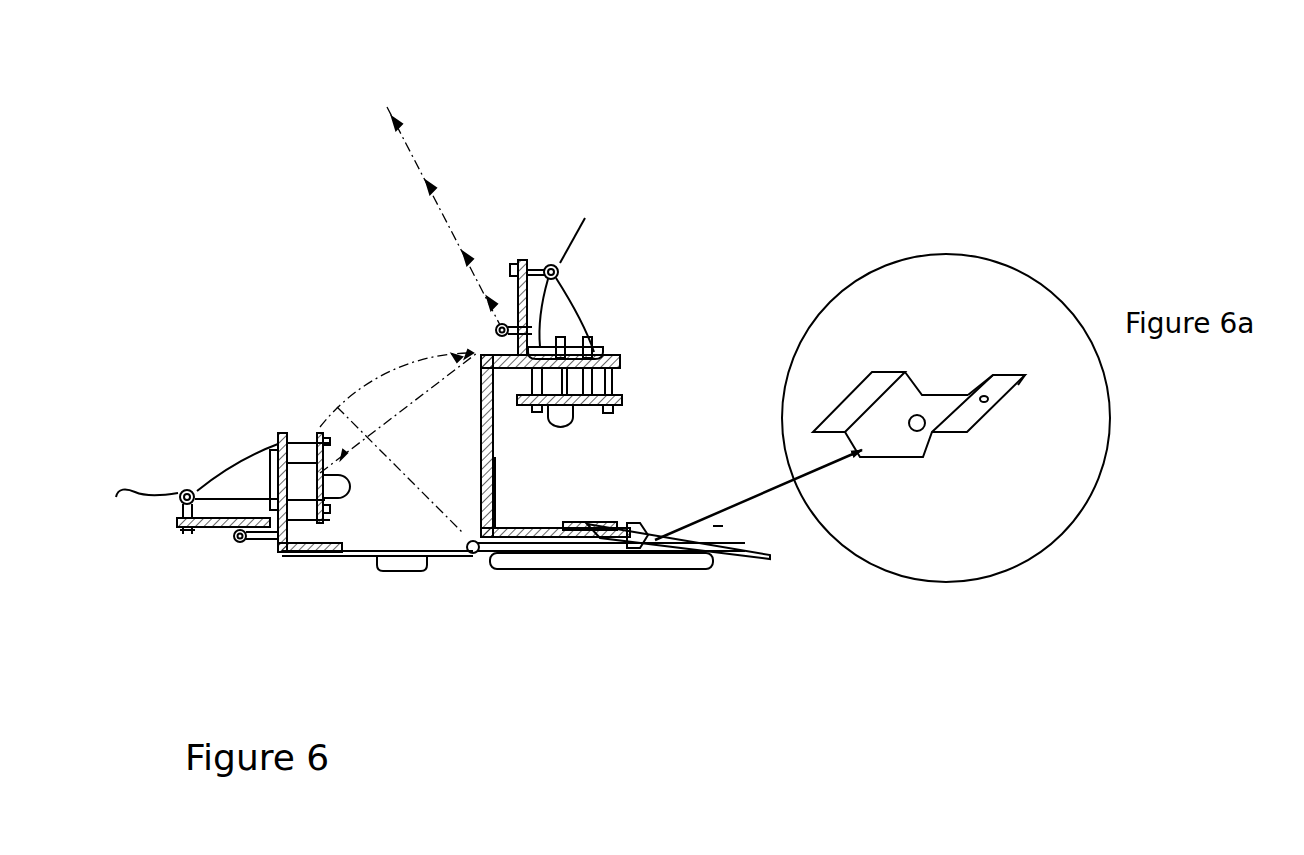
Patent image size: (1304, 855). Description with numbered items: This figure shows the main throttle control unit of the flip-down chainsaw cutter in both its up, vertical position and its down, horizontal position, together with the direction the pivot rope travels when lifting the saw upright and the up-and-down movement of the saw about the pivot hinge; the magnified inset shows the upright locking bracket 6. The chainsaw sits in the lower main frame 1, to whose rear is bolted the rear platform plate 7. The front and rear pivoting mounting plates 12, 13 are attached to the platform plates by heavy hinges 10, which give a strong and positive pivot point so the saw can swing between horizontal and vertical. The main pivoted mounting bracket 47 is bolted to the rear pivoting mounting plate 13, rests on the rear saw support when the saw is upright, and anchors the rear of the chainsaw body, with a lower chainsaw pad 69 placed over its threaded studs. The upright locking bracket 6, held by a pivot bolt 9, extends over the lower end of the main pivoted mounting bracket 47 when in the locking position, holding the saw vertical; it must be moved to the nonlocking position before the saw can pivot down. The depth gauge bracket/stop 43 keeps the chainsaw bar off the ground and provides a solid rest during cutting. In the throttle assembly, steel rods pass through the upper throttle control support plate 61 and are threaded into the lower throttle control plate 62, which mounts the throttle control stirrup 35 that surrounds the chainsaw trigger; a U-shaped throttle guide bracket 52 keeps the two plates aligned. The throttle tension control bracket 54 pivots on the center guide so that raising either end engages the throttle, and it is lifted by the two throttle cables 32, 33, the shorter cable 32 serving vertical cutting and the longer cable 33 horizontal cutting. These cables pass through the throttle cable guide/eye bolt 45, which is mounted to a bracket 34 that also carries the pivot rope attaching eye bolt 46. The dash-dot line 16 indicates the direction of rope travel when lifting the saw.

In FIG. 6, the lower main frame 1 is at (635, 558).
In FIG. 6, the upright locking bracket 6 is at (720, 530).
In FIG. 6A, the upright locking bracket 6 is at (1027, 273).
In FIG. 6, the rear platform plate 7 is at (362, 553).
In FIG. 6, the pivot bolt 9 is at (670, 538).
In FIG. 6A, the pivot bolt 9 is at (922, 415).
In FIG. 6, the heavy hinge 10 is at (476, 552).
In FIG. 6, the front pivoting mounting plate 12 is at (483, 437).
In FIG. 6, the rear pivoting mounting plate 13 is at (483, 437).
In FIG. 6, the axis 16 is at (453, 238).
In FIG. 6, the throttle cable 32 is at (557, 268).
In FIG. 6, the throttle cable 33 is at (567, 285).
In FIG. 6, the bracket 34 is at (213, 528).
In FIG. 6, the throttle control stirrup 35 is at (622, 397).
In FIG. 6, the depth gauge bracket/stop 43 is at (400, 563).
In FIG. 6, the throttle cable guide/eye bolt 45 is at (549, 266).
In FIG. 6, the pivot rope attaching eye bolt 46 is at (496, 328).
In FIG. 6, the main pivoted mounting bracket 47 is at (490, 490).
In FIG. 6, the U-shaped throttle guide bracket 52 is at (610, 383).
In FIG. 6, the throttle tension control bracket 54 is at (270, 450).
In FIG. 6, the upper throttle control support plate 61 is at (620, 360).
In FIG. 6, the lower throttle control plate 62 is at (572, 413).
In FIG. 6, the lower chainsaw pad 69 is at (652, 537).